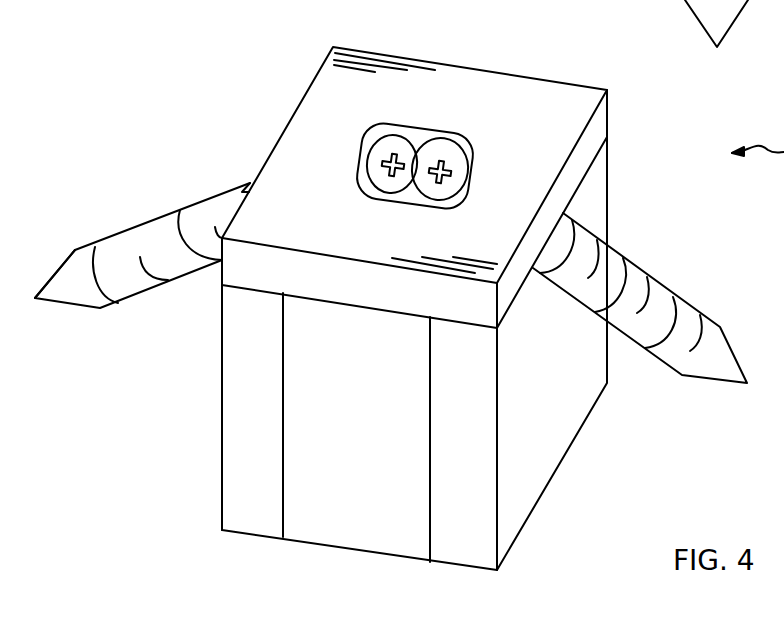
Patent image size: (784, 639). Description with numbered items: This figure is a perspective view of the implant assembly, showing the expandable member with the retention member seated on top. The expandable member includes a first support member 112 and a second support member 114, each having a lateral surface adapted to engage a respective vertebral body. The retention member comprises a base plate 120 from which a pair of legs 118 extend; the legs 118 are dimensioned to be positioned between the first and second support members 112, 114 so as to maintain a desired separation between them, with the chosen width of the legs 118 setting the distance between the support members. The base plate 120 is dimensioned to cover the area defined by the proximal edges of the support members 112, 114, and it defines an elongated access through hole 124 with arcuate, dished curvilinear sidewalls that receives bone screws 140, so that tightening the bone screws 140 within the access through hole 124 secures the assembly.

The first support member 112 is at (565, 397).
The second support member 114 is at (222, 447).
The legs 118 is at (313, 523).
The base plate 120 is at (577, 97).
The access through hole 124 is at (422, 140).
The bone screw 140 is at (442, 152).